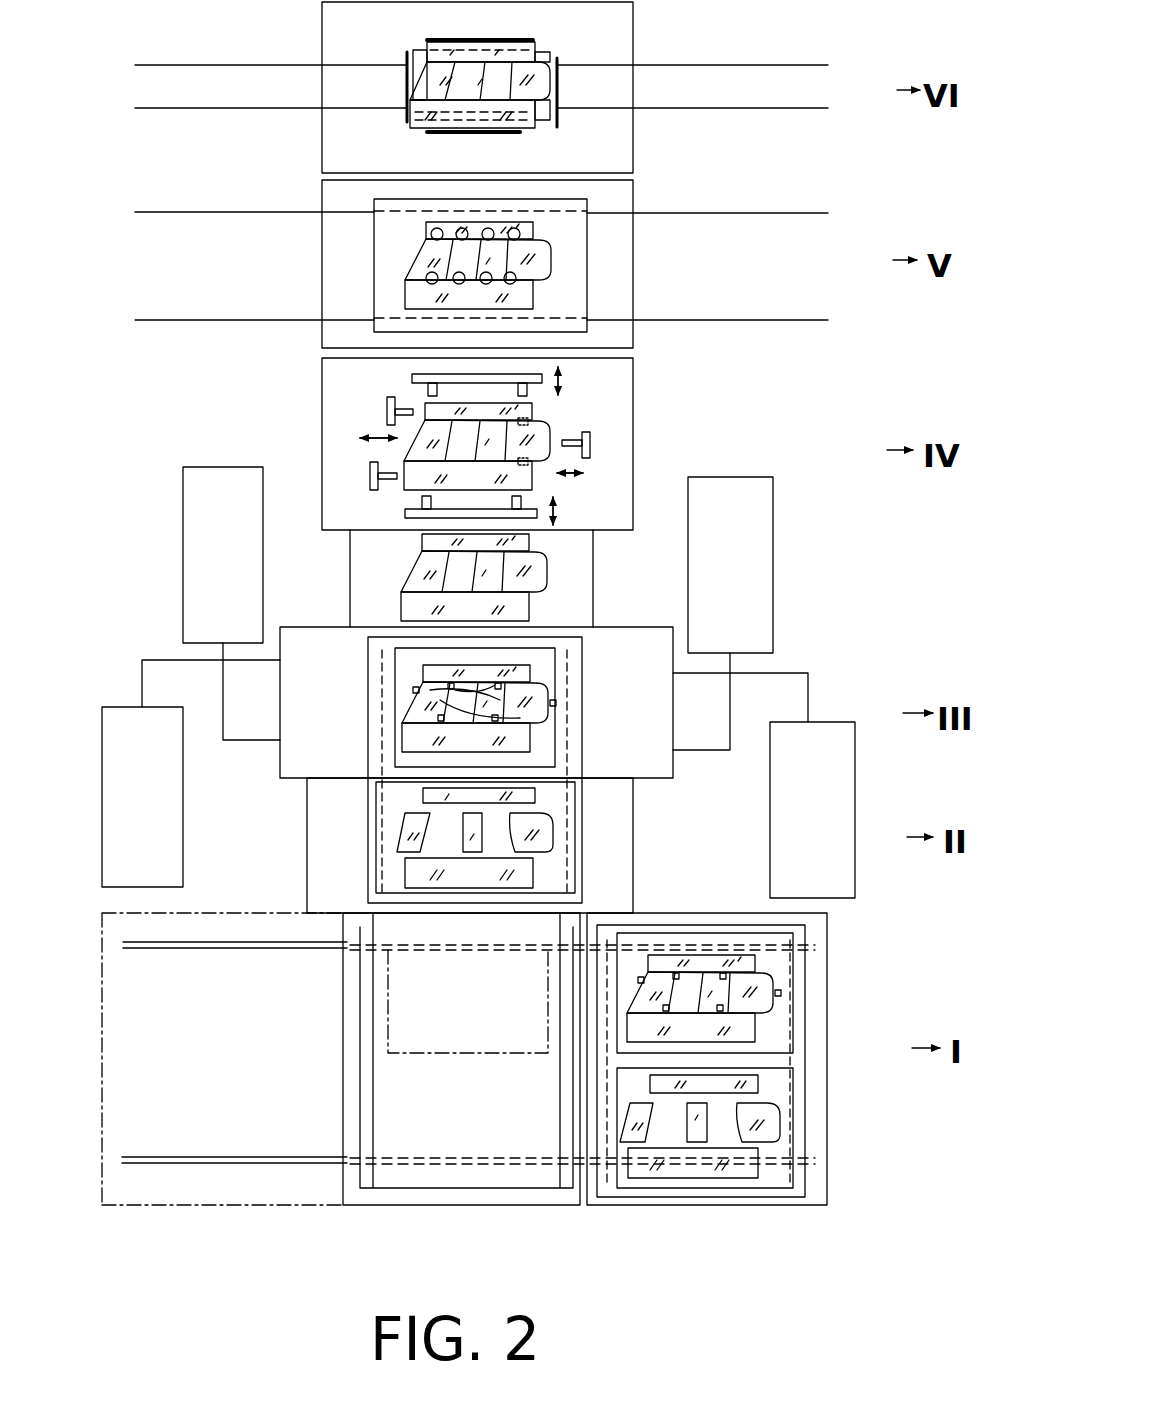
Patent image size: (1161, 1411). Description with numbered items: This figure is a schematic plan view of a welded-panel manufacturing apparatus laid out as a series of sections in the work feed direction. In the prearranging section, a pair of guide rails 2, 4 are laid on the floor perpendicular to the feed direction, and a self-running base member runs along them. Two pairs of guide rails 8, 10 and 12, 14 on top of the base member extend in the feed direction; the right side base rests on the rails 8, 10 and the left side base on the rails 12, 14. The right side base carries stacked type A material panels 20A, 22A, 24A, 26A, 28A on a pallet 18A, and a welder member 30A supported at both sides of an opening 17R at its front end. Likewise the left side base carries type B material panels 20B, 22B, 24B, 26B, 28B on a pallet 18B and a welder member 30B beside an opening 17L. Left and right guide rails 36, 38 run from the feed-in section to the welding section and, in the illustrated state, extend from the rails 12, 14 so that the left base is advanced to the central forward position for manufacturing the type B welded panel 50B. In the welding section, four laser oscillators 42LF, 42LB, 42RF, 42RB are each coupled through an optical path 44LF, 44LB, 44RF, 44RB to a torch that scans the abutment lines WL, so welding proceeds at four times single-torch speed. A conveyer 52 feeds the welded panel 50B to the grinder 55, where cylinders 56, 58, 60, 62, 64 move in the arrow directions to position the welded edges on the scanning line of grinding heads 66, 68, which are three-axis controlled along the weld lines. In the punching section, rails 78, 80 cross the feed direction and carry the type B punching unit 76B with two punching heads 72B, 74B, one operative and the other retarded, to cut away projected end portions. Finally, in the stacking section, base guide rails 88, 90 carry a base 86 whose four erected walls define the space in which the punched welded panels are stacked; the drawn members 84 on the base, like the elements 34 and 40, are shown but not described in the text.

The guide rail 2 is at (170, 1157).
The guide rail 4 is at (172, 948).
The guide rail 8 is at (793, 1060).
The guide rail 10 is at (615, 1205).
The guide rail 12 is at (560, 1143).
The guide rail 14 is at (377, 1137).
The opening 17L is at (538, 668).
The opening 17R is at (763, 963).
The pallet 18A is at (800, 1100).
The pallet 18B is at (583, 863).
The material panel 20A is at (722, 1087).
The material panel 20B is at (423, 795).
The material panel 22A is at (632, 1108).
The material panel 22B is at (397, 840).
The material panel 24A is at (698, 1135).
The material panel 24B is at (463, 830).
The material panel 26A is at (770, 1127).
The material panel 26B is at (540, 890).
The material panel 28A is at (713, 1175).
The material panel 28B is at (452, 888).
The welder member 30A is at (800, 1020).
The welder member 30B is at (577, 662).
The jig frame side 34 is at (633, 808).
The guide rail 36 is at (583, 897).
The guide rail 38 is at (368, 897).
The welding station housing 40 is at (673, 763).
The laser oscillator 42LF is at (223, 555).
The laser oscillator 42RF is at (730, 565).
The laser oscillator 42LB is at (142, 797).
The laser oscillator 42RB is at (812, 810).
The optical path 44LF is at (220, 710).
The optical path 44RF is at (760, 716).
The optical path 44LB is at (142, 683).
The optical path 44RB is at (847, 670).
The welded panel 50B is at (527, 132).
The conveyer 52 is at (573, 547).
The grinder 55 is at (633, 385).
The cylinder 56 is at (405, 512).
The cylinder 58 is at (370, 472).
The cylinder 60 is at (387, 406).
The cylinder 62 is at (412, 380).
The cylinder 64 is at (590, 442).
The grinding head 66 is at (533, 413).
The grinding head 68 is at (533, 477).
The punching head 72B is at (410, 258).
The punching head 74B is at (427, 226).
The punching unit 76B is at (590, 203).
The rail 78 is at (760, 213).
The rail 80 is at (763, 320).
The inspection clamp members 84 is at (480, 38).
The base 86 is at (543, 120).
The base guide rail 88 is at (481, 139).
The base guide rail 90 is at (688, 65).
The abutment line WL is at (423, 698).